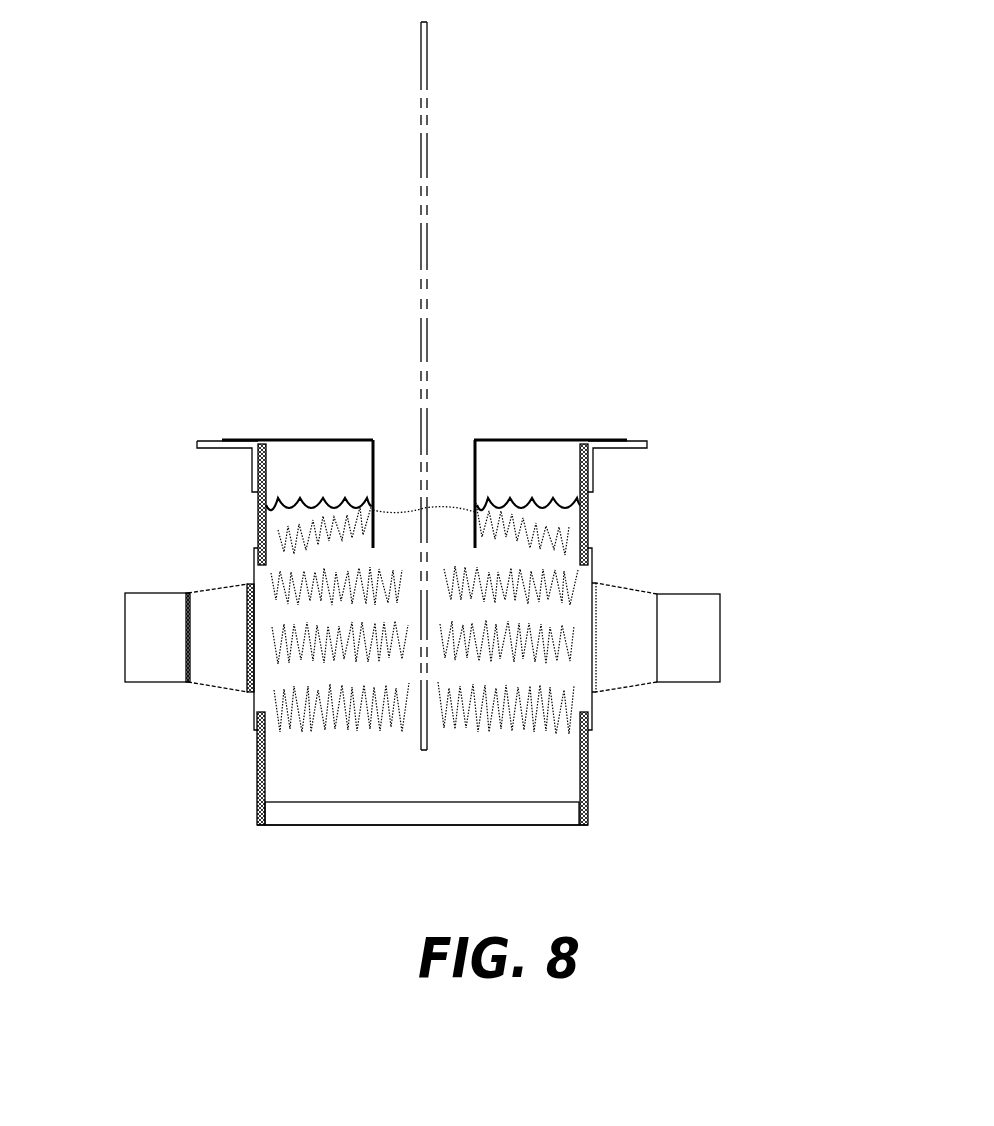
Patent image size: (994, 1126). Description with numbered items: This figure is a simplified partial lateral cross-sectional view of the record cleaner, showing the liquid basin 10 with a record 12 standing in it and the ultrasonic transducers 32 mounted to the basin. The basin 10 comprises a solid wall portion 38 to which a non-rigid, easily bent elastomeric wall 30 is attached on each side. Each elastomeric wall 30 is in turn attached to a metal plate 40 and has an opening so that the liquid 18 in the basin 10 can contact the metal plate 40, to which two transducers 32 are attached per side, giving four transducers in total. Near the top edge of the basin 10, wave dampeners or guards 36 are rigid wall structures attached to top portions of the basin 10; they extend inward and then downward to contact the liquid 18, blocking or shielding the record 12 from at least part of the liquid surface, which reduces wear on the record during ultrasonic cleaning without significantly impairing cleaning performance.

The liquid basin 10 is at (572, 762).
The record 12 is at (420, 175).
The liquid 18 is at (317, 502).
The elastomeric wall 30 is at (257, 532).
The ultrasonic transducer 32 is at (142, 645).
The wave dampener 36 is at (352, 440).
The solid wall portion 38 is at (252, 465).
The metal plate 40 is at (257, 580).